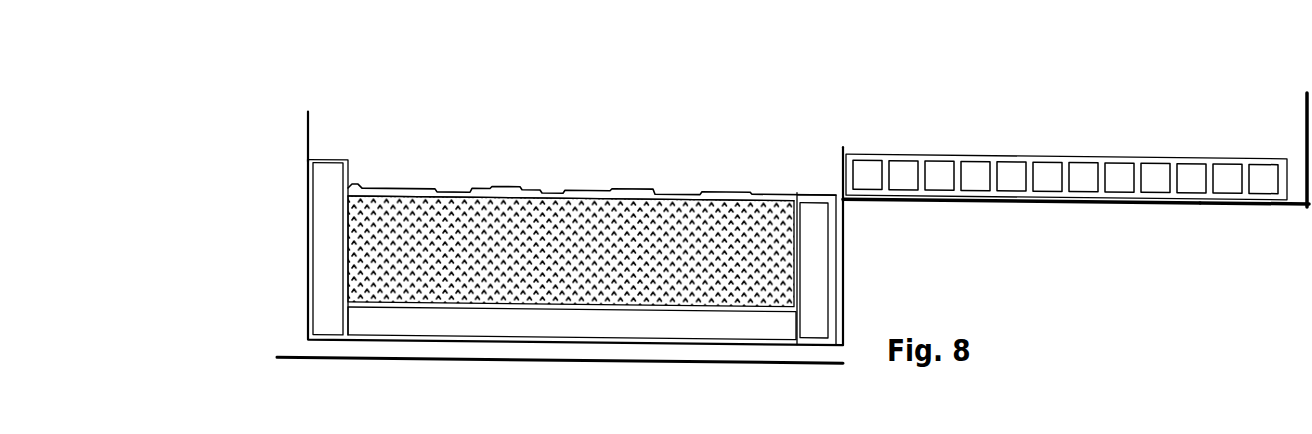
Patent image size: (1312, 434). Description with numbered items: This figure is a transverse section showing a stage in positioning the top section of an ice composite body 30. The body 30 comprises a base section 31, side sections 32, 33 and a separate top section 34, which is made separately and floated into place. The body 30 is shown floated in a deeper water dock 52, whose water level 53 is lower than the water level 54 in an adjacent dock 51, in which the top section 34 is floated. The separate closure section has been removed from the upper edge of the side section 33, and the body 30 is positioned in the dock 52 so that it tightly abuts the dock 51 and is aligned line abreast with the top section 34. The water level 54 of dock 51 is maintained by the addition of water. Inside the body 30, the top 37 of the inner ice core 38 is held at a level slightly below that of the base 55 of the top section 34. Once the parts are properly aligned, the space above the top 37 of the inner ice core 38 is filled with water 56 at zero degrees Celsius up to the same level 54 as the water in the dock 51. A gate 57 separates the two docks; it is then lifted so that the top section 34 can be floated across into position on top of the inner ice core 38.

The ice composite body 30 is at (312, 76).
The base section 31 is at (502, 338).
The side section 32 is at (307, 275).
The side section 33 is at (843, 297).
The top section 34 is at (957, 156).
The top of inner ice core 37 is at (395, 188).
The inner ice core 38 is at (570, 265).
The dock 51 is at (1302, 208).
The deeper water dock 52 is at (293, 348).
The water level 53 is at (303, 207).
The water level 54 is at (1305, 192).
The base of top section 55 is at (1030, 196).
The water 56 is at (637, 190).
The gate 57 is at (840, 163).